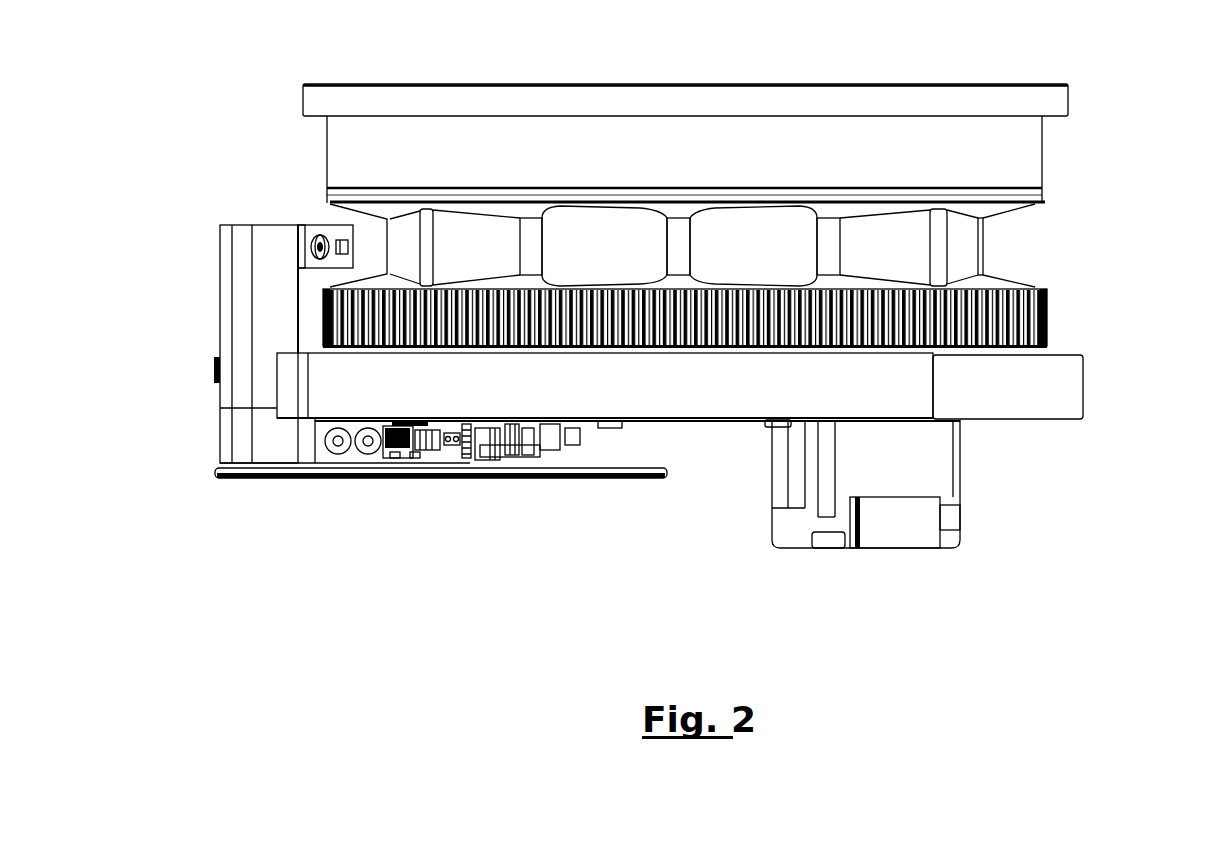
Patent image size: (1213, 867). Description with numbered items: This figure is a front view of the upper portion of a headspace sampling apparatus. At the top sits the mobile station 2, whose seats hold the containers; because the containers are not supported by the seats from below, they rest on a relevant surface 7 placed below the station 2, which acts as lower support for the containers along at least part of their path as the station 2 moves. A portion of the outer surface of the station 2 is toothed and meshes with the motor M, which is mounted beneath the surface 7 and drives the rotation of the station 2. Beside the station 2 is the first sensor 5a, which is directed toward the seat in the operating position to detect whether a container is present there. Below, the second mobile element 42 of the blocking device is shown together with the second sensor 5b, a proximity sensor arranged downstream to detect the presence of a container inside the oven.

The mobile station 2 is at (1013, 151).
The relevant surface 7 is at (1060, 353).
The first sensor 5a is at (323, 225).
The second sensor 5b is at (418, 462).
The second mobile element 42 is at (593, 479).
The motor M is at (925, 478).